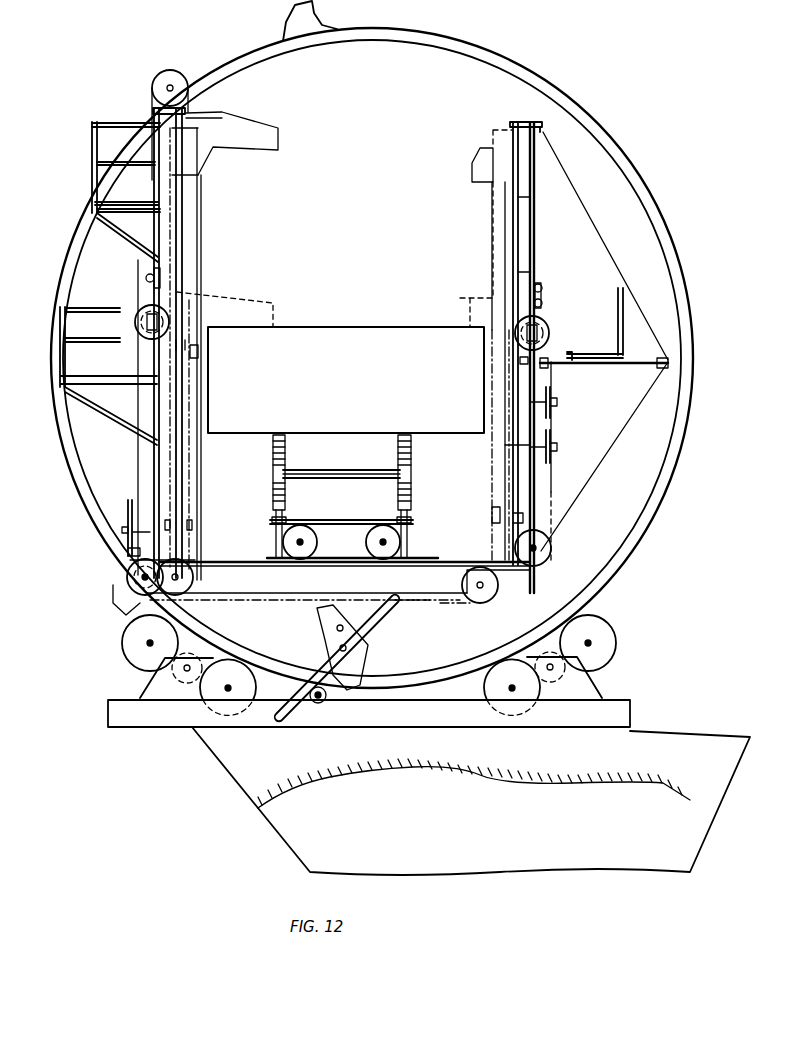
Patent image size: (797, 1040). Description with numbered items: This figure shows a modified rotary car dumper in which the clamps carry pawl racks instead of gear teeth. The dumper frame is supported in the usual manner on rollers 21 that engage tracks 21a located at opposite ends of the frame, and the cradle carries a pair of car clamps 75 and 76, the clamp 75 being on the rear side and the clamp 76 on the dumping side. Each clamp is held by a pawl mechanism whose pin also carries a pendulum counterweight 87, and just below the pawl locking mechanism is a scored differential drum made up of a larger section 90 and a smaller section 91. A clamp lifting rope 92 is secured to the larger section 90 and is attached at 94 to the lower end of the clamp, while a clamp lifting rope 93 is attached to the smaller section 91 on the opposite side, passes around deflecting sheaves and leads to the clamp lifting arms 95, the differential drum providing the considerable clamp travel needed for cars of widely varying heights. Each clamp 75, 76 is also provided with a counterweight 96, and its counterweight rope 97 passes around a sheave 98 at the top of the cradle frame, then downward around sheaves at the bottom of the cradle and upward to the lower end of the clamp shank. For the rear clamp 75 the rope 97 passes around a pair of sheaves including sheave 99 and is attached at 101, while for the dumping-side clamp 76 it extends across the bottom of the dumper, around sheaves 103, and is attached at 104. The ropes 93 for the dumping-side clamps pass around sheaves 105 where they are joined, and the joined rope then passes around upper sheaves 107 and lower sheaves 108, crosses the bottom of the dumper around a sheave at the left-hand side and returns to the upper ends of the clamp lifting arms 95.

The rollers 21 is at (610, 637).
The tracks 21a is at (630, 566).
The clamp 75 is at (242, 122).
The clamp 76 is at (480, 163).
The pendulum counterweight 87 is at (135, 327).
The larger section of differential drum 90 is at (138, 307).
The smaller section of differential drum 91 is at (140, 350).
The clamp lifting rope 92 is at (552, 477).
The clamp lifting rope 93 is at (128, 513).
The attachment point of clamp lifting rope 94 is at (170, 340).
The clamp lifting arm 95 is at (375, 622).
The counterweight 96 is at (200, 158).
The counterweight rope 97 is at (192, 99).
The sheave 98 is at (178, 78).
The sheave 99 is at (183, 578).
The attachment point of counterweight rope 101 is at (198, 350).
The sheave 103 is at (483, 601).
The attachment point of counterweight rope 104 is at (522, 360).
The sheave 105 is at (555, 412).
The upper sheave 107 is at (555, 457).
The lower sheave 108 is at (547, 560).